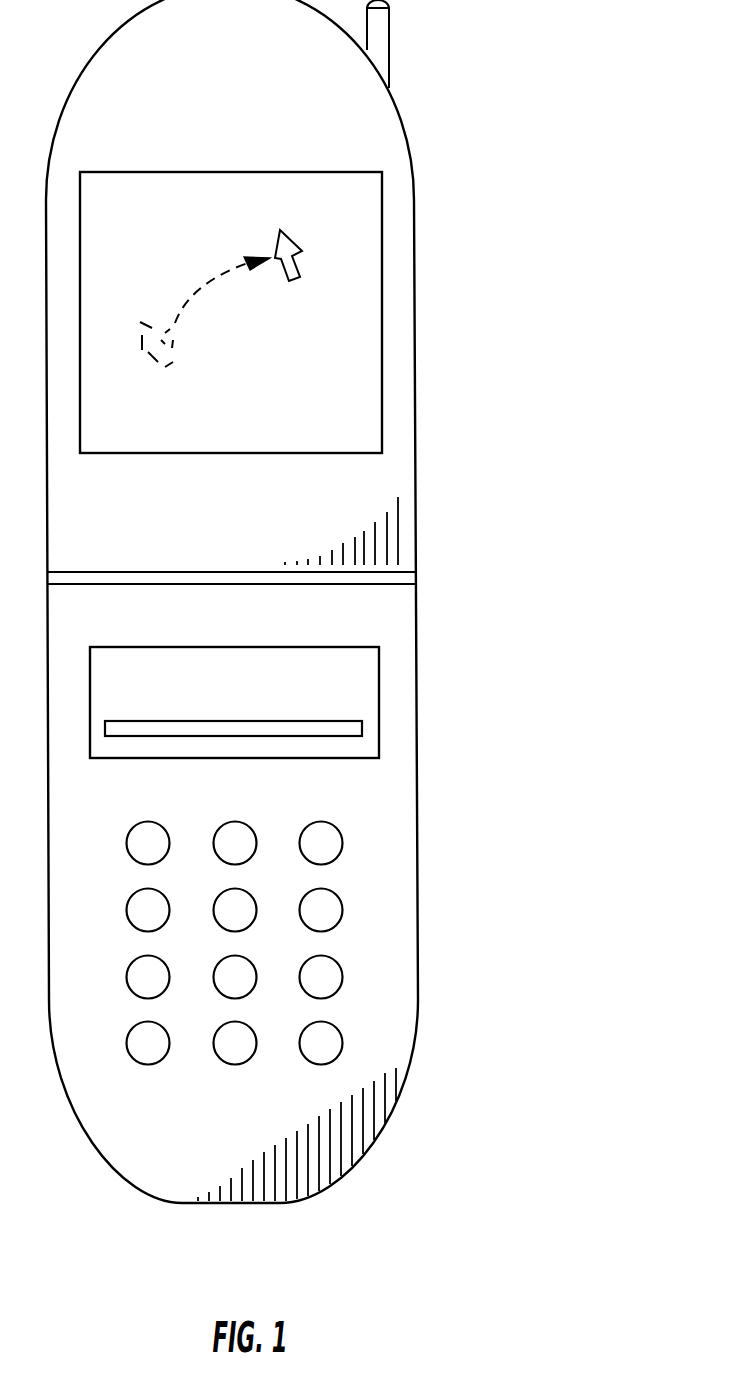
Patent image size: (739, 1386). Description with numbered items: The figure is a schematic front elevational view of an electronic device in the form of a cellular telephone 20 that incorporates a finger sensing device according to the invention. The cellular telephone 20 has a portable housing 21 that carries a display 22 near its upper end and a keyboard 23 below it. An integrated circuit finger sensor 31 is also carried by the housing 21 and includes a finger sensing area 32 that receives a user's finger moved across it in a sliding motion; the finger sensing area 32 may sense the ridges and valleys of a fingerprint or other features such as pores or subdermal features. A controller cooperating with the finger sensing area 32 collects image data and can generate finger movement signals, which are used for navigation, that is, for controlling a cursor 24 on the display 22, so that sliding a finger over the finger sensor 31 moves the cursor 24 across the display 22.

The cellular telephone 20 is at (507, 141).
The portable housing 21 is at (417, 425).
The display 22 is at (382, 288).
The keyboard 23 is at (233, 910).
The cursor 24 is at (300, 252).
The integrated circuit finger sensor 31 is at (390, 660).
The finger sensing area 32 is at (350, 725).